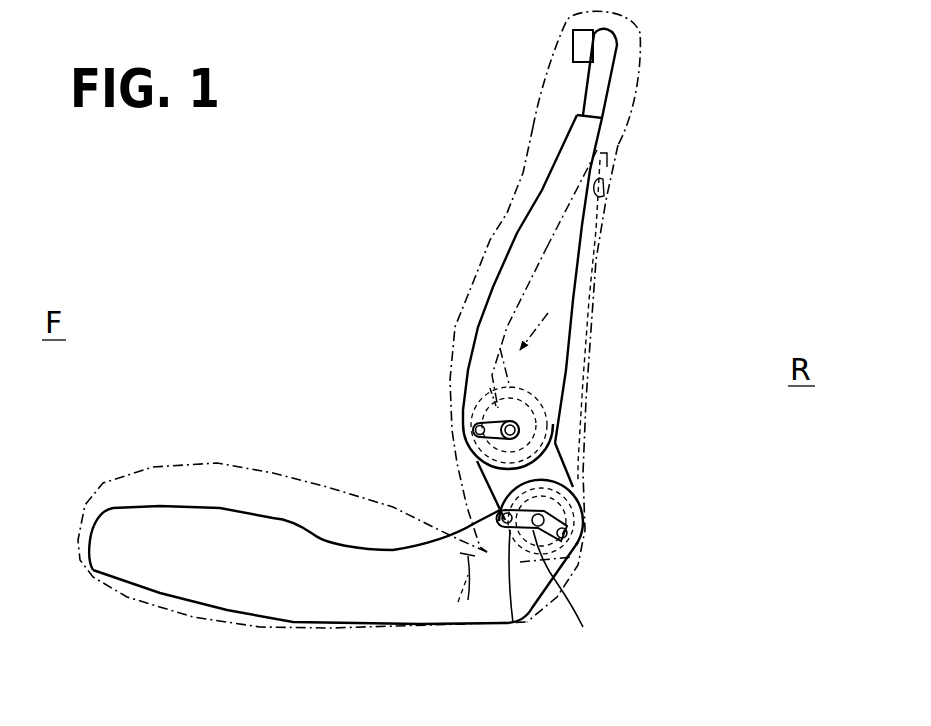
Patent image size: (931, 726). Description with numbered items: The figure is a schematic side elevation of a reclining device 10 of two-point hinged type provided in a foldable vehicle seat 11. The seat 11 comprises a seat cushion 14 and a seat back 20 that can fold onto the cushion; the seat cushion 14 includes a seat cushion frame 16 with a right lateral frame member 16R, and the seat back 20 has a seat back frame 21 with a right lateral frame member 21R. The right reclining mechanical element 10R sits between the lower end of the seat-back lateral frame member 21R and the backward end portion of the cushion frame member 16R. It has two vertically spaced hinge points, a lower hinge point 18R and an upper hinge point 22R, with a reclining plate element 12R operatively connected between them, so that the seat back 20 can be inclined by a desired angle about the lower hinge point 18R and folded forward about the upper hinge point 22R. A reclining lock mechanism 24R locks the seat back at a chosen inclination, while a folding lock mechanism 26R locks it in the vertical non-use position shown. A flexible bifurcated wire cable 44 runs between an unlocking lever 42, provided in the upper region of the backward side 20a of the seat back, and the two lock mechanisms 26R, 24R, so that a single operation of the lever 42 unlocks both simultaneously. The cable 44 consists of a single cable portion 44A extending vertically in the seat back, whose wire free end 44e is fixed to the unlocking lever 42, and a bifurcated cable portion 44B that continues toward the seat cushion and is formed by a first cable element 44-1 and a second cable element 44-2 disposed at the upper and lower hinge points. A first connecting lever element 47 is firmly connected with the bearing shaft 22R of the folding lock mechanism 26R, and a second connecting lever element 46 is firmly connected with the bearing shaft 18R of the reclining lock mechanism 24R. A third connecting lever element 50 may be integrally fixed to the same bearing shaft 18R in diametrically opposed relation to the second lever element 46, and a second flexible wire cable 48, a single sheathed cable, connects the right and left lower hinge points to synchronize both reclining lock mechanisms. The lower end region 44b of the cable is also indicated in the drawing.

The reclining device of two-point hinged type 10 is at (714, 98).
The right reclining mechanical element 10R is at (685, 321).
The vehicle seat 11 is at (328, 491).
The seat cushion 14 is at (246, 466).
The seat cushion frame 16 is at (167, 490).
The right lateral frame member of seat cushion frame 16R is at (347, 607).
The lower hinge point (bearing shaft) 18R is at (580, 597).
The seat back 20 is at (533, 127).
The backward side of seat back 20a is at (590, 312).
The seat back frame 21 is at (483, 290).
The right lateral frame member of seat back frame 21R is at (477, 333).
The upper hinge point (bearing shaft) 22R is at (520, 428).
The reclining plate element 12R is at (562, 457).
The right-side reclining lock mechanism 24R is at (560, 481).
The right-side folding lock mechanism 26R is at (478, 467).
The unlocking lever 42 is at (606, 165).
The flexible bifurcated wire cable 44 is at (543, 243).
The single cable portion 44A is at (567, 208).
The bifurcated cable portion 44B is at (557, 307).
The first cable element 44-1 is at (486, 384).
The second cable element 44-2 is at (513, 380).
The lower end of tension member 44b is at (573, 557).
The free end of wire 44e is at (603, 193).
The second connecting lever element 46 is at (560, 518).
The first connecting lever element 47 is at (487, 440).
The second flexible wire cable 48 is at (458, 602).
The third connecting lever element 50 is at (514, 627).